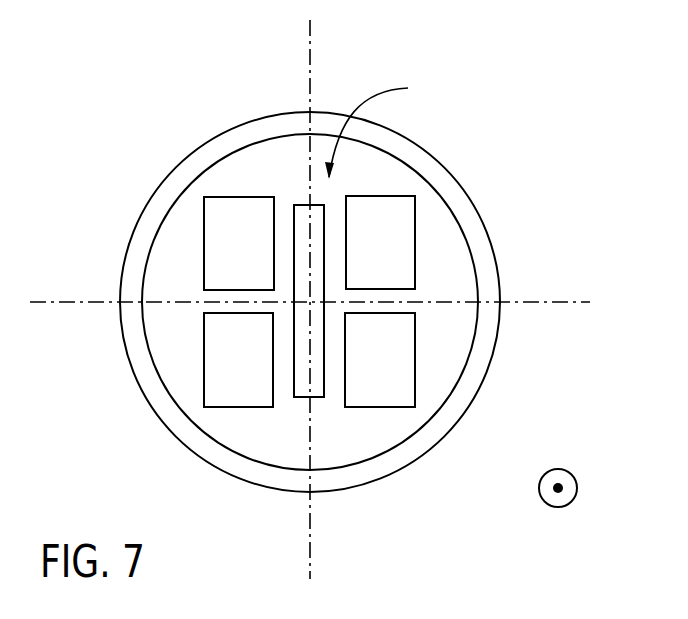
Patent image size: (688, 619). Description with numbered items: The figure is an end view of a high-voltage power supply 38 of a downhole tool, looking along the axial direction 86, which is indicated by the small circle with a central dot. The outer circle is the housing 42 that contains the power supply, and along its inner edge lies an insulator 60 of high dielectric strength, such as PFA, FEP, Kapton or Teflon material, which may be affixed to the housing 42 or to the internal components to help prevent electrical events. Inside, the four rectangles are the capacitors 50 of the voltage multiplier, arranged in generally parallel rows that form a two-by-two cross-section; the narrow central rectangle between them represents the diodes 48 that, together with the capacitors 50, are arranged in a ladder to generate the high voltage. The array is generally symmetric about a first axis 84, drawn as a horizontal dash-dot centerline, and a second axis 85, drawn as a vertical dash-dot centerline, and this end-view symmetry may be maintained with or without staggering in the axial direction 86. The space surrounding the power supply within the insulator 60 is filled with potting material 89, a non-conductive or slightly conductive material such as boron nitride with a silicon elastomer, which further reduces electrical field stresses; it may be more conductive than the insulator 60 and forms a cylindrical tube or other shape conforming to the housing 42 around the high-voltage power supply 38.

The high-voltage power supply 38 is at (384, 128).
The housing 42 is at (215, 133).
The diodes 48 is at (317, 407).
The capacitors 50 is at (415, 243).
The insulator 60 is at (487, 273).
The first axis 84 is at (62, 300).
The second axis 85 is at (310, 52).
The axial direction 86 is at (558, 488).
The potting material 89 is at (458, 346).